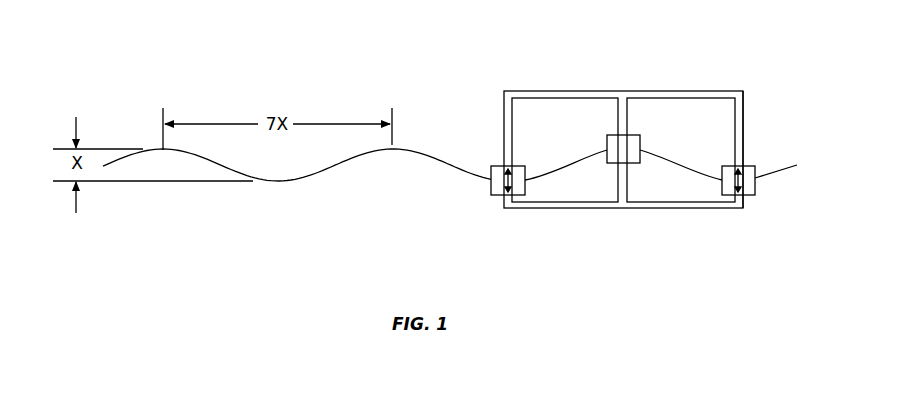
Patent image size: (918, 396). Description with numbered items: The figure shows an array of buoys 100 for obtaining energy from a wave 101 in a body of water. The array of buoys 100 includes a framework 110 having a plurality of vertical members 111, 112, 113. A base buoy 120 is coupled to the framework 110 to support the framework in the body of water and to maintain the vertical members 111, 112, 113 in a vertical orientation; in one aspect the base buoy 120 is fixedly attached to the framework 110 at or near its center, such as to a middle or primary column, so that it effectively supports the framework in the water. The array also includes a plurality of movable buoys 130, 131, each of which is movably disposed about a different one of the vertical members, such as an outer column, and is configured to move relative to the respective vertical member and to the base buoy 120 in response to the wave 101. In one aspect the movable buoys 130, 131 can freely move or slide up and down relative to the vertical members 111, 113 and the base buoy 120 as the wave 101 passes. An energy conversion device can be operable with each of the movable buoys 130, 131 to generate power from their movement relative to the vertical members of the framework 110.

The array of buoys 100 is at (566, 45).
The wave 101 is at (555, 170).
The framework 110 is at (670, 91).
The vertical member 111 is at (504, 112).
The vertical member 112 is at (630, 110).
The vertical member 113 is at (743, 110).
The base buoy 120 is at (632, 164).
The movable buoy 130 is at (491, 186).
The movable buoy 131 is at (757, 187).